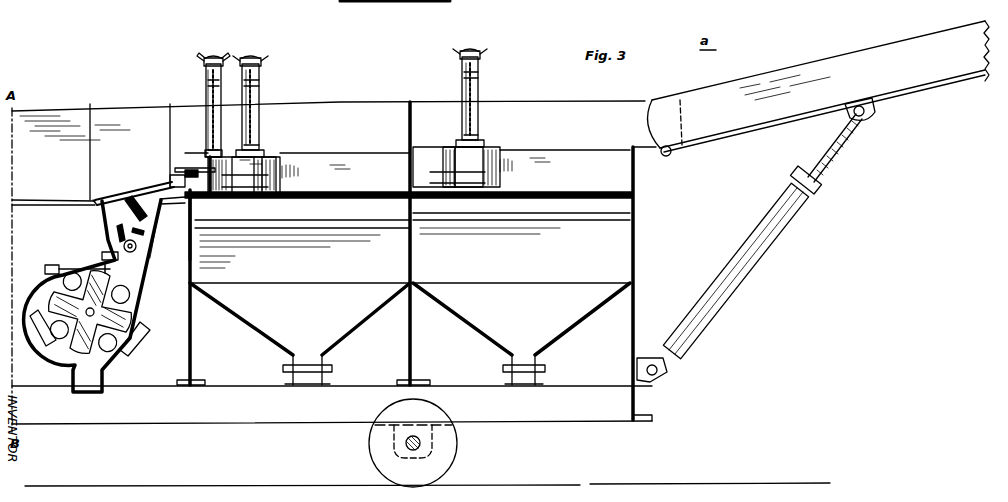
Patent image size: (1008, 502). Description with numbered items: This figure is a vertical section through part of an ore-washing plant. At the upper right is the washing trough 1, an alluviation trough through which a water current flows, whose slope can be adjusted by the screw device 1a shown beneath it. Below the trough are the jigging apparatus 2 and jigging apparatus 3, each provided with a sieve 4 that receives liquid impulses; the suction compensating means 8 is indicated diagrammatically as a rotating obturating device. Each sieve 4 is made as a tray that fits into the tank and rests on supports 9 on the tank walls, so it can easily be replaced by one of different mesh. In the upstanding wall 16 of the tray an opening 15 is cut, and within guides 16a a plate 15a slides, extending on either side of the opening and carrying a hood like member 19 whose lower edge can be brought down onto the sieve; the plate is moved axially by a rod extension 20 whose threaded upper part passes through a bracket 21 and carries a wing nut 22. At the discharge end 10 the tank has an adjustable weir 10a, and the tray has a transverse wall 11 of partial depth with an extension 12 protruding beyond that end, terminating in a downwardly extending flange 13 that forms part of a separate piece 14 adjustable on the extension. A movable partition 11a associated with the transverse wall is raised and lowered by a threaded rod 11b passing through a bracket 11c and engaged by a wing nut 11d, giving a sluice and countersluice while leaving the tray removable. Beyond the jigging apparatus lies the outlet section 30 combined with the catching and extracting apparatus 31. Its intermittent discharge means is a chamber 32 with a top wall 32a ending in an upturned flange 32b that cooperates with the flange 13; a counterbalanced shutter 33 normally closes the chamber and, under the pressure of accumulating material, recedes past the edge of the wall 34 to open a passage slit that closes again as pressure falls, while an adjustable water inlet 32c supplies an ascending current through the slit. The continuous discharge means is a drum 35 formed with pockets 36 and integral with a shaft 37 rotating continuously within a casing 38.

The washing trough 1 is at (830, 62).
The screw device 1a is at (800, 207).
The jigging apparatus 2 is at (632, 246).
The jigging apparatus 3 is at (350, 318).
The sieve 4 is at (340, 190).
The suction compensating means 8 is at (374, 3).
The support 9 is at (362, 215).
The discharge end 10 is at (180, 210).
The adjustable weir 10a is at (205, 248).
The transverse wall 11 is at (205, 150).
The movable partition 11a is at (210, 148).
The threaded rod 11b is at (206, 78).
The bracket 11c is at (205, 62).
The wing nut 11d is at (222, 60).
The extension 12 is at (208, 160).
The downwardly extending flange 13 is at (185, 173).
The separate piece 14 is at (205, 165).
The opening 15 is at (255, 195).
The plate 15a is at (252, 160).
The upstanding wall 16 is at (290, 160).
The guide 16a is at (270, 160).
The hood like member 19 is at (270, 180).
The rod extension 20 is at (259, 88).
The bracket 21 is at (259, 75).
The wing nut 22 is at (261, 57).
The outlet section 30 is at (124, 117).
The catching and/or extracting apparatus 31 is at (100, 233).
The chamber 32 is at (150, 190).
The top wall 32a is at (112, 197).
The upturned flange 32b is at (170, 180).
The adjustable water inlet 32c is at (102, 256).
The shutter 33 is at (125, 213).
The wall 34 is at (152, 260).
The drum 35 is at (40, 340).
The pocket 36 is at (70, 285).
The shaft 37 is at (62, 310).
The casing 38 is at (132, 353).